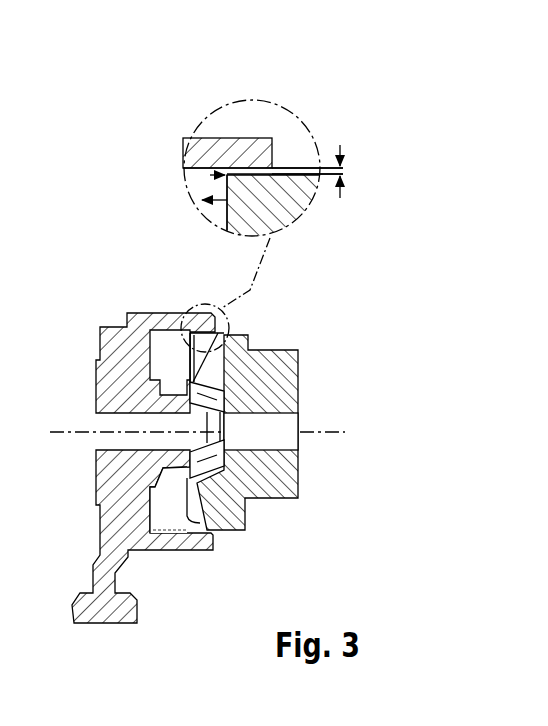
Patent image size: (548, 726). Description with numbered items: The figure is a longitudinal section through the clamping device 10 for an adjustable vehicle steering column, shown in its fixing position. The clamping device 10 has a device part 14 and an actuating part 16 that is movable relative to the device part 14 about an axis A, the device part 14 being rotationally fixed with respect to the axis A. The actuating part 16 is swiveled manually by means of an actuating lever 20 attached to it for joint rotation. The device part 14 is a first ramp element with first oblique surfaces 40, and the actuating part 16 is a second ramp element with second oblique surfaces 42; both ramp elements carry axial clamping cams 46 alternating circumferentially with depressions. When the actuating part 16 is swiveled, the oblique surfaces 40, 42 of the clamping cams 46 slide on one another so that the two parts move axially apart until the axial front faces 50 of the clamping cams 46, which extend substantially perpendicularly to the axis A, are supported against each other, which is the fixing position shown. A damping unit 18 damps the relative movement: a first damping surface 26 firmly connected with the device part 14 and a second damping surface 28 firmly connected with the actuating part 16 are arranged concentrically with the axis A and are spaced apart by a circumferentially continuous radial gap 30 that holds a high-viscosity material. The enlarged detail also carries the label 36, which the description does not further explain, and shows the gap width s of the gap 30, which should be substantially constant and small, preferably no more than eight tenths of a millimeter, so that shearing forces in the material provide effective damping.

The clamping device 10 is at (193, 400).
The device part 14 is at (283, 387).
The actuating part 16 is at (287, 125).
The damping unit 18 is at (295, 139).
The actuating lever 20 is at (97, 575).
The first damping surface 26 is at (253, 180).
The second damping surface 28 is at (238, 165).
The radial gap 30 is at (217, 540).
The first sealing surface 36 is at (257, 147).
The first oblique surfaces 40 is at (218, 358).
The second oblique surfaces 42 is at (155, 363).
The axial clamping cams 46 is at (169, 503).
The axial front faces 50 is at (190, 342).
The axis A is at (52, 432).
The gap width s is at (343, 171).